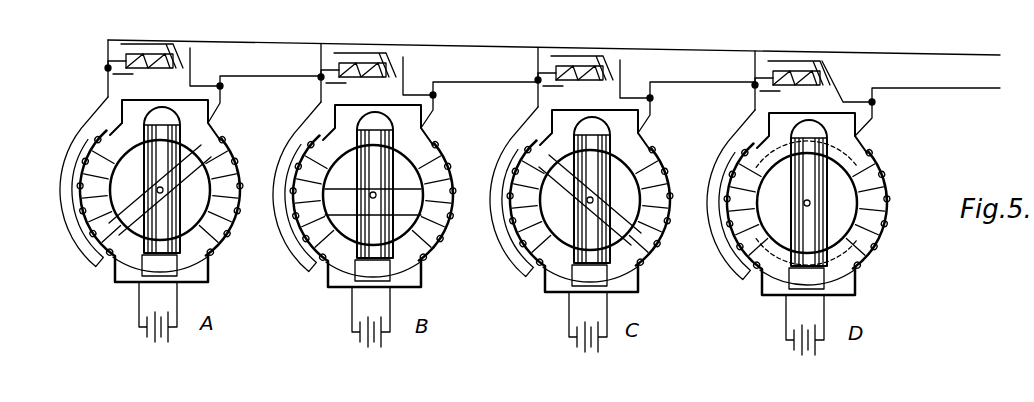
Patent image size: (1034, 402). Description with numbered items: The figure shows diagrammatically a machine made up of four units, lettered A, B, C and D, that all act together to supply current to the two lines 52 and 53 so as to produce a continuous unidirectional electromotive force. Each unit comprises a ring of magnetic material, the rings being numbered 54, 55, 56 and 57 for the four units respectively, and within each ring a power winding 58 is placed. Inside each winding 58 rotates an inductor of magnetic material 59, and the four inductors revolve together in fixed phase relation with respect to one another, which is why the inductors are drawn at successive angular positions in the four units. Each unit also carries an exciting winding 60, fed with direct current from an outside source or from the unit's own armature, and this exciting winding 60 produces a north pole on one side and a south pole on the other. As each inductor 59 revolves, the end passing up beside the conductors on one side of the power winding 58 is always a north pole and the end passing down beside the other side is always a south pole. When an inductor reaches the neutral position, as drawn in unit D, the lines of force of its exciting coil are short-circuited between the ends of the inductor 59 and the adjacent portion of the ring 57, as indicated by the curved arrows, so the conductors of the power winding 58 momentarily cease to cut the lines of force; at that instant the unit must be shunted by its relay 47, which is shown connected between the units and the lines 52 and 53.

The relay 47 is at (832, 62).
The line 52 is at (977, 55).
The line 53 is at (977, 88).
The ring of magnetic material 54 is at (217, 152).
The ring of magnetic material 55 is at (430, 157).
The ring of magnetic material 56 is at (647, 160).
The ring of magnetic material 57 is at (867, 163).
The winding 58 is at (887, 197).
The inductor of magnetic material 59 is at (830, 215).
The exciting winding 60 is at (857, 268).